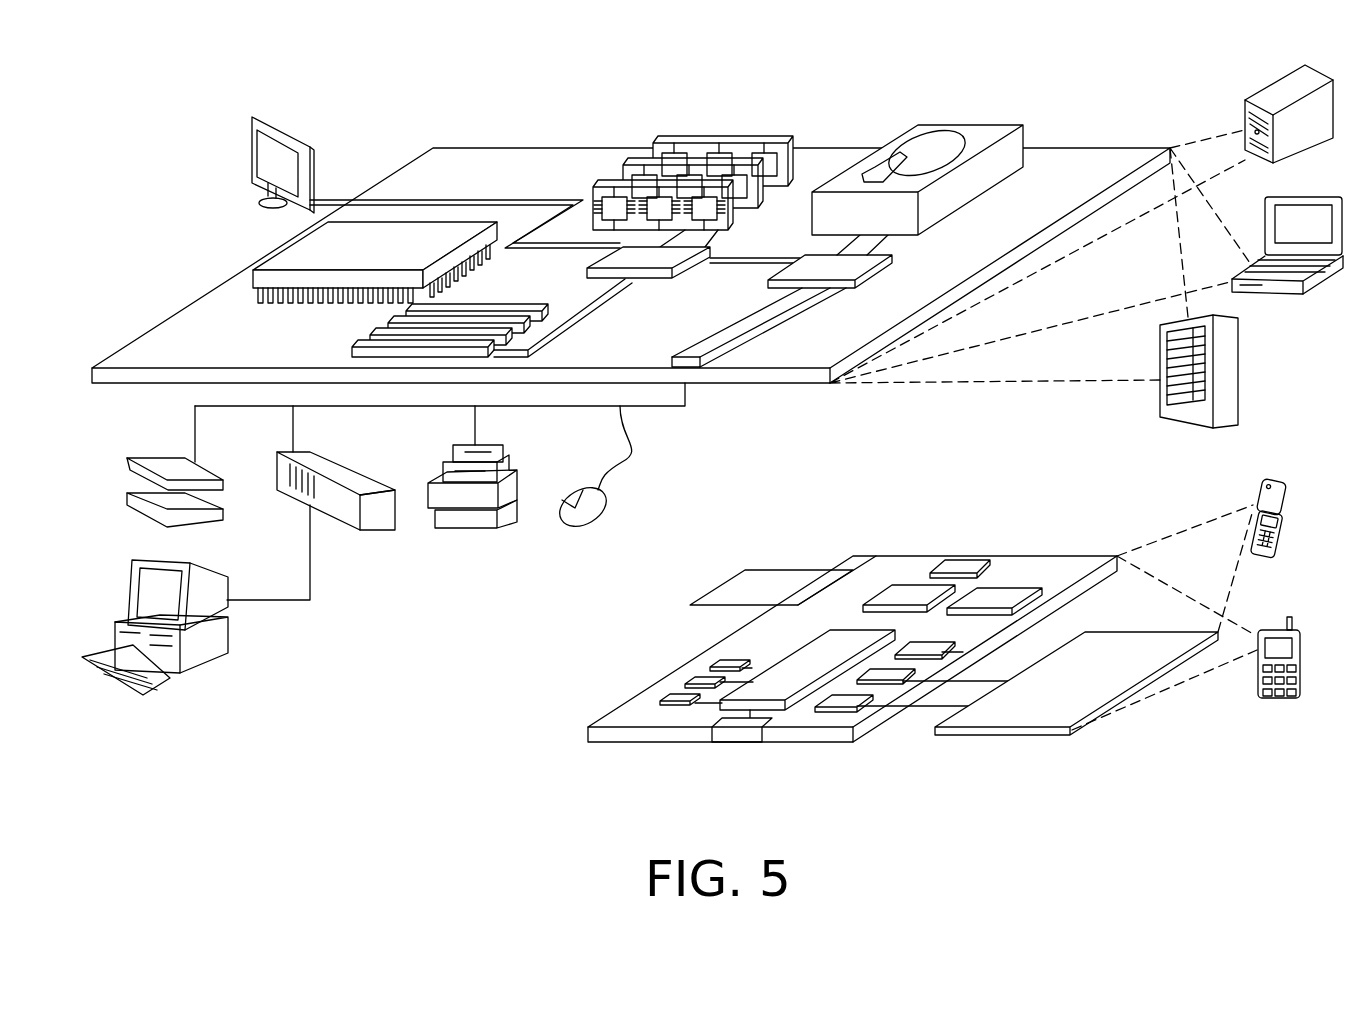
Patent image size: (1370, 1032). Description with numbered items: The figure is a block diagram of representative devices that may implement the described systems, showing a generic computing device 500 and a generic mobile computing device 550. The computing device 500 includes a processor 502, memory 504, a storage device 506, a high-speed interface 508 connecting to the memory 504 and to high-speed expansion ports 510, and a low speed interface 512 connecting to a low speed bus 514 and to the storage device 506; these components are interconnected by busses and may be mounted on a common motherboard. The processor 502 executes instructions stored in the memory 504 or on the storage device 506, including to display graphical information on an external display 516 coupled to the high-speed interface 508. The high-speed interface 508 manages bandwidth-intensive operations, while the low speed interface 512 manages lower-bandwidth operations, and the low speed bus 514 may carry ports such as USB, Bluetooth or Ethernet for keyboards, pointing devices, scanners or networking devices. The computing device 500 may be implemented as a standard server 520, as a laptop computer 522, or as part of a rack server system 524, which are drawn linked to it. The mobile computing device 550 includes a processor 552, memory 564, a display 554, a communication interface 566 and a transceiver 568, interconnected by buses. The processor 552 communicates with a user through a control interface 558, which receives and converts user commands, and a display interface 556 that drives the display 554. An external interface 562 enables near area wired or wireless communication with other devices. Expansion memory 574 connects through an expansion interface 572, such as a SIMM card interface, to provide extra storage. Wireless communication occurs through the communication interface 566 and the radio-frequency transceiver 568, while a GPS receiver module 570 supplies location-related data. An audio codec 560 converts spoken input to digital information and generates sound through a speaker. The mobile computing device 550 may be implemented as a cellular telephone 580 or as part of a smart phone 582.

The computing device 500 is at (384, 94).
The processor 502 is at (278, 252).
The memory 504 is at (726, 140).
The storage device 506 is at (960, 122).
The high-speed interface 508 is at (660, 256).
The high-speed expansion ports 510 is at (376, 330).
The low speed interface 512 is at (803, 264).
The low speed bus 514 is at (690, 350).
The display 516 is at (256, 115).
The standard server 520 is at (1263, 92).
The laptop computer 522 is at (1320, 196).
The rack server system 524 is at (1240, 369).
The mobile computer device 550 is at (548, 748).
The processor 552 is at (776, 680).
The display 554 is at (1117, 645).
The display interface 556 is at (853, 702).
The control interface 558 is at (893, 674).
The audio codec 560 is at (928, 650).
The external interface 562 is at (737, 742).
The memory 564 is at (690, 682).
The communication interface 566 is at (908, 588).
The transceiver 568 is at (1000, 590).
The GPS receiver module 570 is at (962, 566).
The expansion interface 572 is at (835, 570).
The expansion memory 574 is at (752, 570).
The cellular telephone 580 is at (1263, 480).
The smart phone 582 is at (1271, 630).